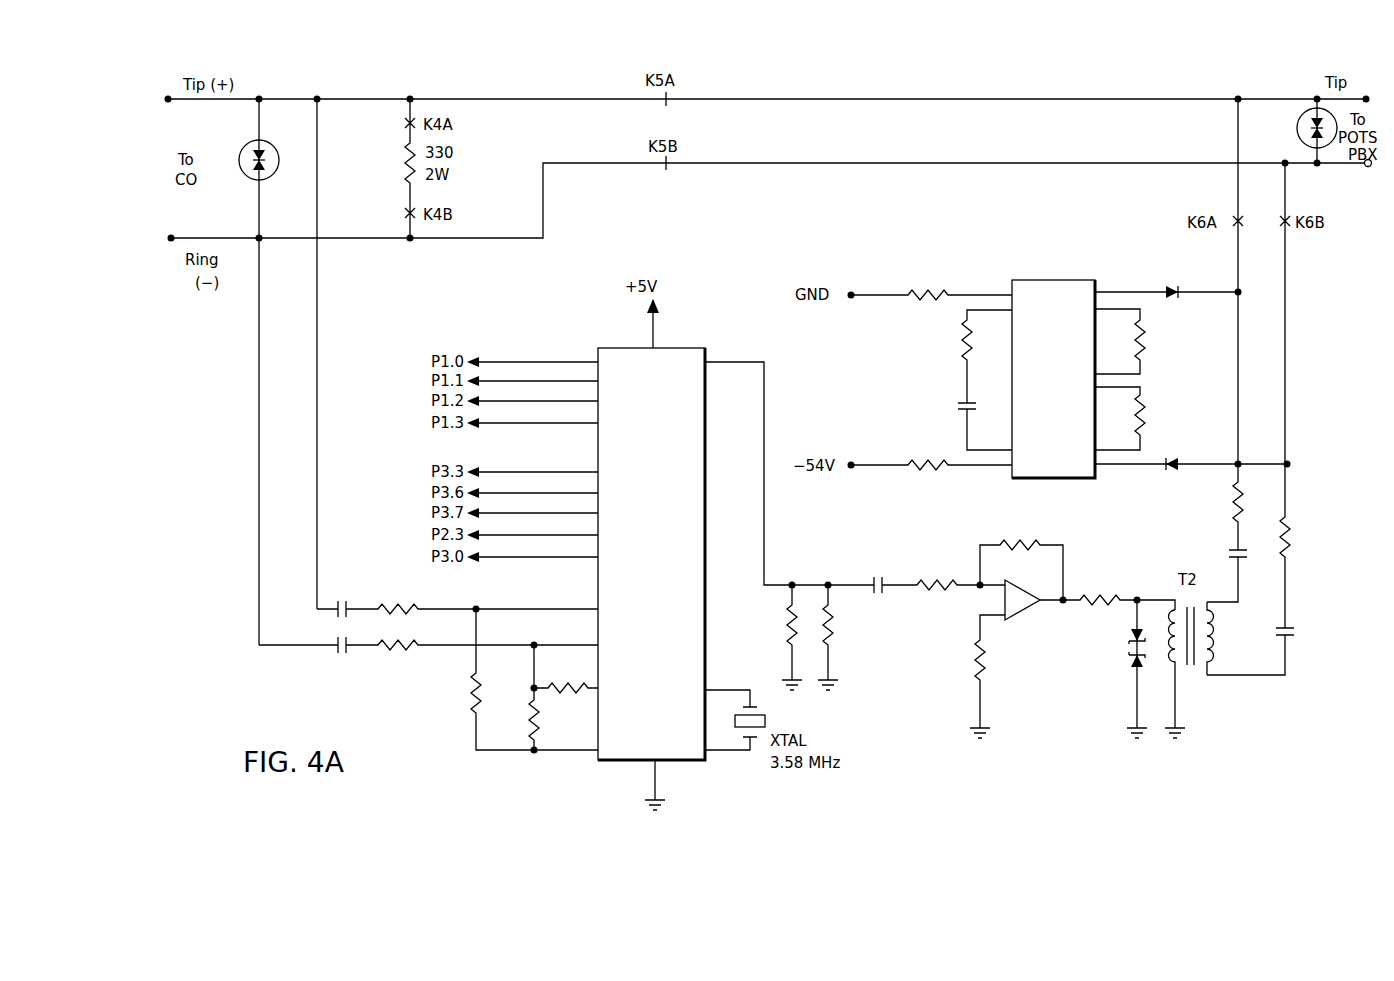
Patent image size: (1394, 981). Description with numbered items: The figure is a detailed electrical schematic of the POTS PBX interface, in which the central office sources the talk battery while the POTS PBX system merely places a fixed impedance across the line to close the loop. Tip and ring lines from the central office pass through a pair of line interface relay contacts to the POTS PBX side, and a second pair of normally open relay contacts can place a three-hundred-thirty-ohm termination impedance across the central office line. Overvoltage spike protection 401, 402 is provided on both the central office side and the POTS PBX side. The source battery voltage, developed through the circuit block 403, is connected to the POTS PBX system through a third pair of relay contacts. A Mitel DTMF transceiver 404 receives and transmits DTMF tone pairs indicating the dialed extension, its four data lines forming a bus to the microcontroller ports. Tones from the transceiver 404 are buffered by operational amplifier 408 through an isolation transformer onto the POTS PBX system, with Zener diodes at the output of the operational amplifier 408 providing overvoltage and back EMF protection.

The overvoltage spike protection 401 is at (275, 173).
The overvoltage spike protection 402 is at (1297, 118).
The LB1011B line interface circuit 403 is at (1062, 278).
The DTMF transceiver 404 is at (620, 768).
The operational amplifier 408 is at (1027, 605).